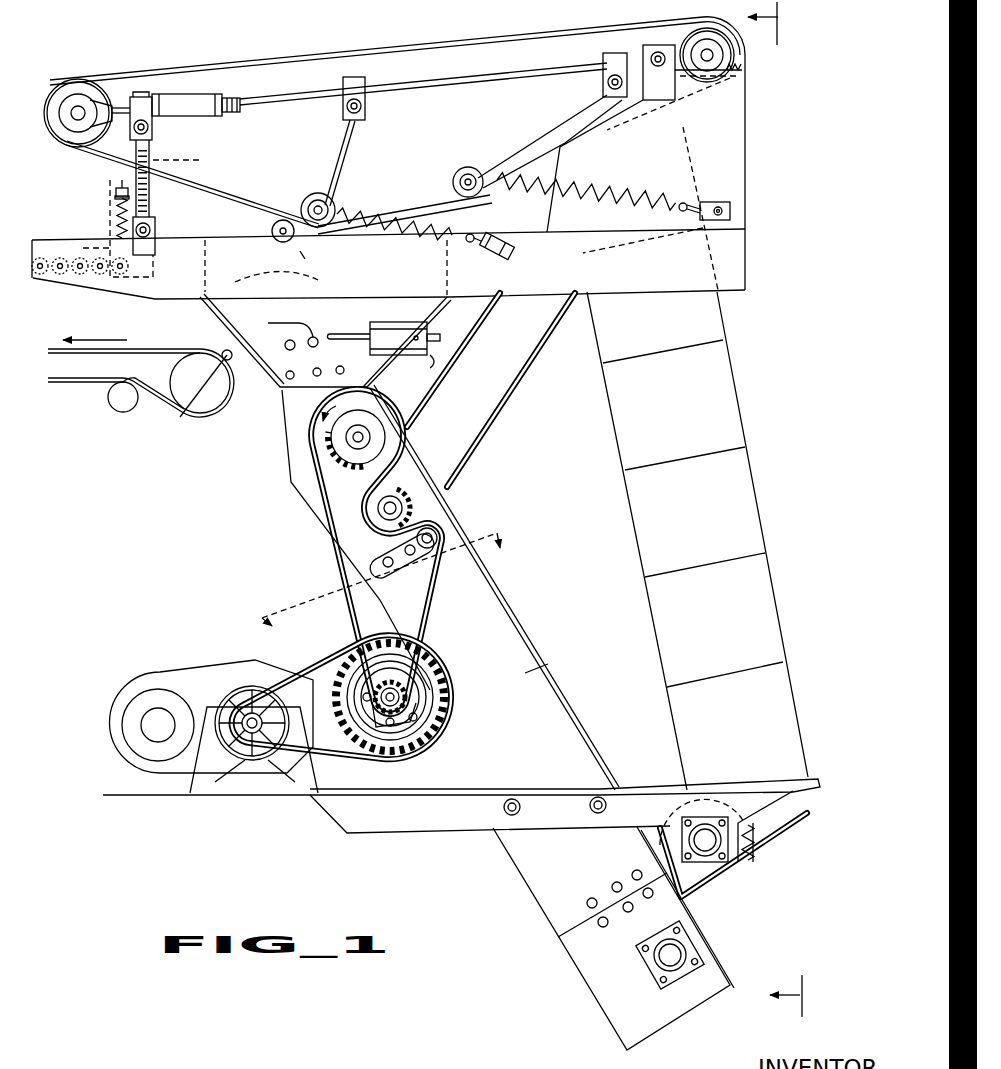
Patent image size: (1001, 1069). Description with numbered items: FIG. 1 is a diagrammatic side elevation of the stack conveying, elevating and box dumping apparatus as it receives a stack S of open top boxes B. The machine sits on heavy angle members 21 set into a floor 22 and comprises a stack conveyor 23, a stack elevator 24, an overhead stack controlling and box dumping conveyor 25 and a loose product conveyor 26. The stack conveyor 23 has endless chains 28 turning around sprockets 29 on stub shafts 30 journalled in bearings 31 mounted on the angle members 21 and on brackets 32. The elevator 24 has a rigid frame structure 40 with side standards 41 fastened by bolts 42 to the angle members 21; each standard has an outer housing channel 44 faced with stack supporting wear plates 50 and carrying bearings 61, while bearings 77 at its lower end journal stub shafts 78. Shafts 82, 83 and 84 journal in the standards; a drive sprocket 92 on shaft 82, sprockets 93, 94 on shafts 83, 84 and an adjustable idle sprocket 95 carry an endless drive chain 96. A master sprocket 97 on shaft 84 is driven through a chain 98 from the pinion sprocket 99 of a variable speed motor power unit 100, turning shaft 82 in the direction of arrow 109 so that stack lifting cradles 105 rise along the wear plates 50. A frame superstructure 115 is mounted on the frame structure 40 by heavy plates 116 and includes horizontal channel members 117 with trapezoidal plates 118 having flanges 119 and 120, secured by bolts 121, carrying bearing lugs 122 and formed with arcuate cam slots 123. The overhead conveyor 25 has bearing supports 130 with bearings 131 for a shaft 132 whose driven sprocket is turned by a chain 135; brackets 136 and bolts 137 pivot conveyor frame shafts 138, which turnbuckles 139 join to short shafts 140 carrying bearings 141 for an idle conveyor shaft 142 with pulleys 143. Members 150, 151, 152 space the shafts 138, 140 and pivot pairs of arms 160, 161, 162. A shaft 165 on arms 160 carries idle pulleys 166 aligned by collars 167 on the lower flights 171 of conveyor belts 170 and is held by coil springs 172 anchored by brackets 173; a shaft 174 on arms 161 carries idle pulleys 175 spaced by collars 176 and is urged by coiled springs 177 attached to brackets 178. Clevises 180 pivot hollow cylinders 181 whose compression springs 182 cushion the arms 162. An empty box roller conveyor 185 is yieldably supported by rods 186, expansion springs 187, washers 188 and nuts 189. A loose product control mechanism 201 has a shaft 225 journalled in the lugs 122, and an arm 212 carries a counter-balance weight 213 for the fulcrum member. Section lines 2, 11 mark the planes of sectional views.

The section line 2- 2 is at (784, 509).
The section line 11- 11 is at (385, 579).
The angle members 21 is at (433, 830).
The floor 22 is at (152, 798).
The stack conveyor 23 is at (800, 776).
The stack elevator 24 is at (572, 716).
The stack controlling and box dumping conveyor 25 is at (122, 69).
The loose product conveyor 26 is at (95, 388).
The endless chains 28 is at (805, 815).
The sprockets 29 is at (743, 823).
The stub shafts 30 is at (712, 846).
The bearings 31 is at (723, 866).
The brackets 32 is at (697, 900).
The rigid frame structure 40 is at (532, 666).
The side standards 41 is at (527, 737).
The bolts 42 is at (593, 812).
The outer housing channel 44 is at (550, 890).
The stack supporting wear plates 50 is at (494, 600).
The bearings 61 is at (414, 709).
The bearings 77 is at (667, 972).
The stub shafts 78 is at (667, 955).
The shaft 82 is at (362, 437).
The shaft 83 is at (404, 510).
The shaft 84 is at (402, 695).
The drive sprocket 92 is at (318, 454).
The sprocket 93 is at (413, 497).
The sprocket 94 is at (398, 680).
The idle sprocket 95 is at (431, 574).
The endless drive chain 96 is at (318, 493).
The master sprocket 97 is at (373, 747).
The chain 98 is at (313, 673).
The pinion sprocket 99 is at (310, 760).
The variable speed electric motor power unit 100 is at (193, 683).
The stack lifting cradles 105 is at (763, 827).
The arrow 109 is at (322, 419).
The frame superstructure 115 is at (187, 281).
The heavy plates 116 is at (287, 392).
The horizontal channel members 117 is at (345, 284).
The trapezoidal plates 118 is at (292, 321).
The flange 119 is at (252, 293).
The flange 120 is at (442, 296).
The bolts 121 is at (290, 340).
The bearing lugs 122 is at (236, 349).
The arcuate cam slots 123 is at (285, 252).
The bearing supports 130 is at (735, 122).
The bearings 131 is at (735, 50).
The shaft 132 is at (738, 76).
The chain 135 is at (510, 396).
The brackets 136 is at (668, 98).
The bolts 137 is at (656, 50).
The conveyor frame shafts 138 is at (489, 78).
The turnbuckles 139 is at (226, 117).
The short shafts 140 is at (153, 97).
The bearings 141 is at (78, 128).
The idle conveyor shaft 142 is at (80, 108).
The pulleys 143 is at (82, 136).
The member 150 is at (603, 60).
The member 151 is at (366, 75).
The member 152 is at (140, 94).
The arms 160 is at (572, 116).
The arms 161 is at (343, 158).
The arms 162 is at (201, 157).
The shaft 165 is at (462, 181).
The idle pulleys 166 is at (472, 167).
The collars 167 is at (466, 168).
The conveyor belts 170 is at (489, 33).
The lower flights 171 is at (437, 205).
The coil springs 172 is at (620, 186).
The brackets 173 is at (727, 189).
The shaft 174 is at (304, 204).
The idle pulleys 175 is at (307, 200).
The collars 176 is at (315, 194).
The coiled springs 177 is at (378, 228).
The brackets 178 is at (514, 256).
The clevises 180 is at (157, 248).
The hollow cylinders 181 is at (153, 208).
The coiled compression springs 182 is at (128, 186).
The roller conveyor 185 is at (70, 282).
The rods 186 is at (78, 249).
The coiled expansion springs 187 is at (85, 221).
The washers 188 is at (115, 203).
The nuts 189 is at (116, 194).
The loose product control mechanism 201 is at (270, 229).
The arm 212 is at (360, 334).
The counter-balance weight 213 is at (432, 356).
The shaft 225 is at (188, 414).
The bag sections B is at (748, 458).
The bag stack S is at (628, 548).